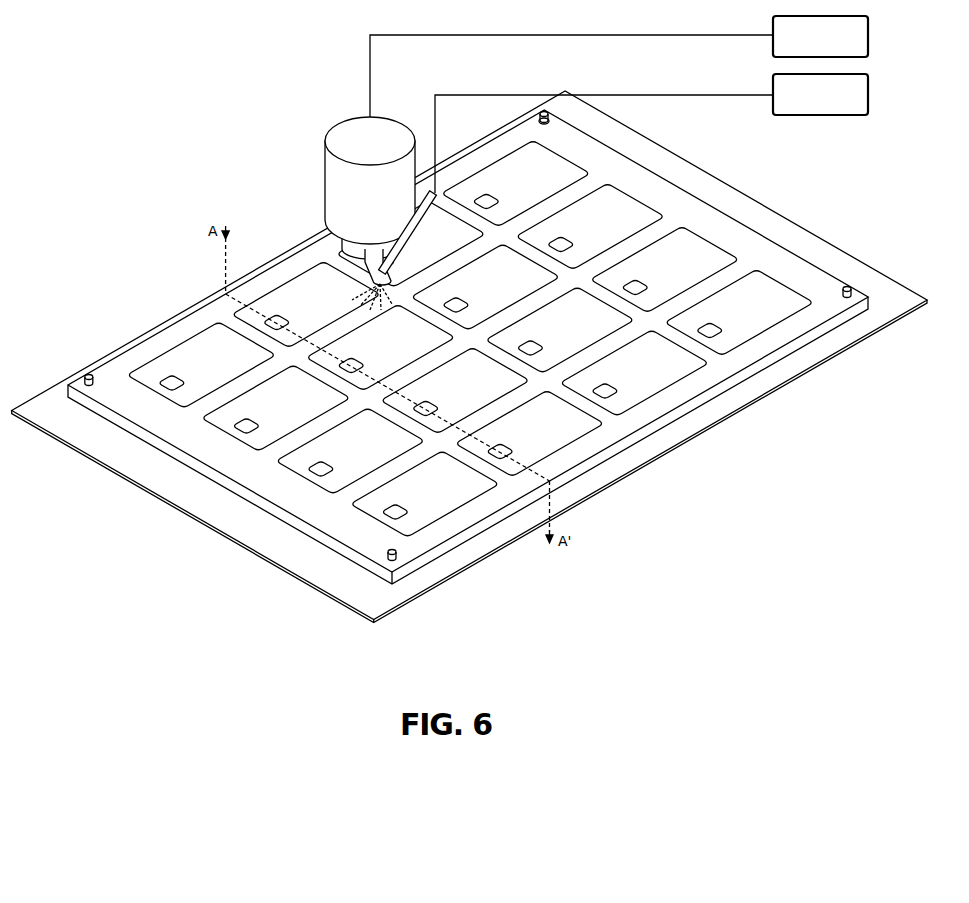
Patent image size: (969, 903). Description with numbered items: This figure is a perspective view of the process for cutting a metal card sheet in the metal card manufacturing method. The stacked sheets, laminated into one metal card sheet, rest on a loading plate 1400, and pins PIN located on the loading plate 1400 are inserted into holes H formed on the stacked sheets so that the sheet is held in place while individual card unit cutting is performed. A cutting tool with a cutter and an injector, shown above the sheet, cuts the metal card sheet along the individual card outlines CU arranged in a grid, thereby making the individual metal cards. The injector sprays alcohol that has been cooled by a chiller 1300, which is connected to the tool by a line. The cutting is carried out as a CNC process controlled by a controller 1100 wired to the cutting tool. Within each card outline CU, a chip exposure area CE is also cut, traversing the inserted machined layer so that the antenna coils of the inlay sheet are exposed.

The controller 1100 is at (870, 36).
The chiller 1300 is at (870, 96).
The loading plate 1400 is at (803, 373).
The individual card outline CU is at (201, 365).
The chip exposure area CE is at (247, 426).
The pin PIN is at (540, 116).
The hole H is at (553, 119).